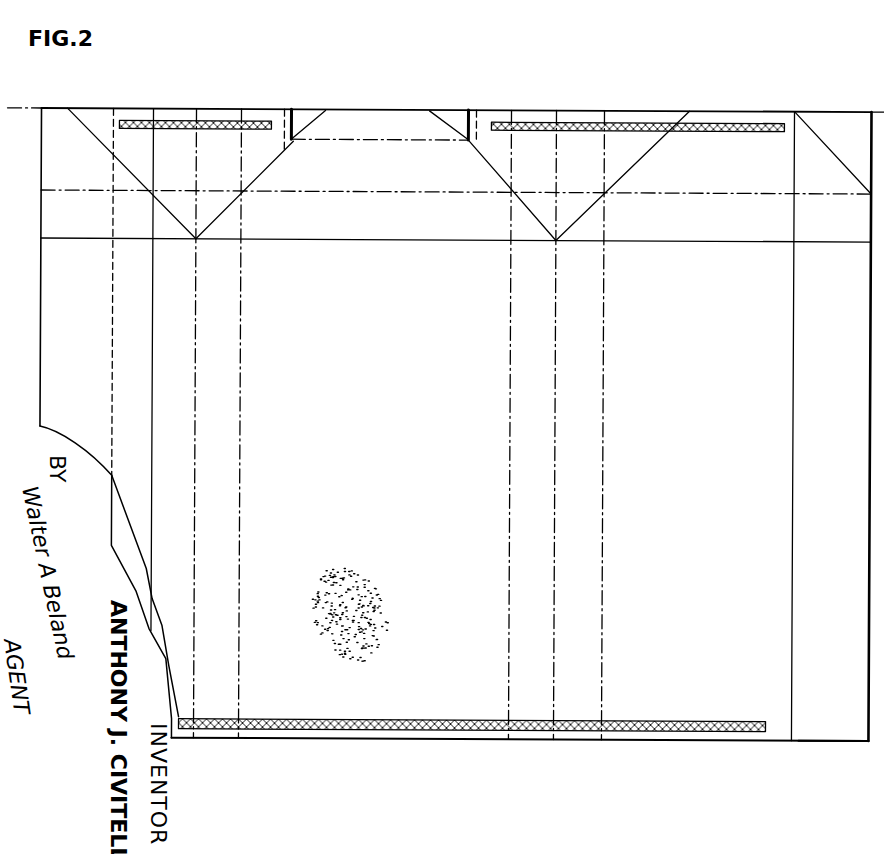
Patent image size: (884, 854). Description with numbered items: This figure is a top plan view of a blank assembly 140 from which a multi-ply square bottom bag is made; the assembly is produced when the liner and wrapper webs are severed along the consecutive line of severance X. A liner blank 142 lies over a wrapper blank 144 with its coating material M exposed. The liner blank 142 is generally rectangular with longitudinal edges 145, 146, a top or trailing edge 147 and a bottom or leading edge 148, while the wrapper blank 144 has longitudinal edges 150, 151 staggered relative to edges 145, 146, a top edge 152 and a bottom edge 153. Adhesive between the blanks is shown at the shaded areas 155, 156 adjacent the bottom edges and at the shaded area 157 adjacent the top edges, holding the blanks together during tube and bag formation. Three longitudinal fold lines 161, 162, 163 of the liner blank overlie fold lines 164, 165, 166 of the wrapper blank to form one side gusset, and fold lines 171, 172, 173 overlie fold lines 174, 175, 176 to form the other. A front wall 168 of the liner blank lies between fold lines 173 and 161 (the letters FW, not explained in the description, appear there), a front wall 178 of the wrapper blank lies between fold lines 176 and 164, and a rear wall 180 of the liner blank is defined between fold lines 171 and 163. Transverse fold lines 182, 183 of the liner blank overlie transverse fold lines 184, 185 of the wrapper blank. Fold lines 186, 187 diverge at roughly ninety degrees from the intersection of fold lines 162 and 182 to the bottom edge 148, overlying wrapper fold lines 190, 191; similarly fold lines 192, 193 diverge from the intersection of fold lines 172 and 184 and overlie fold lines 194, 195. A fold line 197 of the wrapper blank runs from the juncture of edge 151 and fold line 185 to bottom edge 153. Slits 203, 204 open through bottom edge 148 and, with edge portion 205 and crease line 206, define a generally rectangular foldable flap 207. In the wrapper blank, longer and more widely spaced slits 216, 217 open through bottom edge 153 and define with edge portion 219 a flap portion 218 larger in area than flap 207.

The blank assembly 140 is at (576, 70).
The liner blank 142 is at (371, 699).
The wrapper blank 144 is at (106, 540).
The longitudinal edge 145 is at (38, 313).
The longitudinal edge 146 is at (793, 447).
The top or trailing edge 147 is at (648, 742).
The bottom or leading edge 148 is at (773, 108).
The longitudinal edge 150 is at (108, 495).
The longitudinal edge 151 is at (870, 500).
The top edge 152 is at (845, 742).
The bottom edge 153 is at (816, 108).
The shaded area 155 is at (165, 122).
The shaded area 156 is at (532, 424).
The shaded area 157 is at (430, 722).
The longitudinal fold line 161 is at (148, 418).
The longitudinal fold line 162 is at (197, 463).
The longitudinal fold line 163 is at (238, 530).
The longitudinal fold line 164 is at (152, 308).
The longitudinal fold line 165 is at (195, 342).
The longitudinal fold line 166 is at (240, 413).
The front wall 168 is at (690, 598).
The longitudinal fold line 171 is at (508, 508).
The longitudinal fold line 172 is at (560, 482).
The longitudinal fold line 173 is at (602, 553).
The longitudinal fold line 174 is at (508, 398).
The longitudinal fold line 175 is at (560, 380).
The longitudinal fold line 176 is at (605, 425).
The front wall 178 is at (820, 372).
The rear wall 180 is at (377, 550).
The transverse fold line 182 is at (293, 241).
The transverse fold line 183 is at (300, 193).
The transverse fold line 184 is at (807, 245).
The transverse fold line 185 is at (856, 194).
The fold line 186 is at (82, 127).
The fold line 187 is at (312, 122).
The fold line 190 is at (128, 163).
The fold line 191 is at (219, 213).
The fold line 192 is at (530, 210).
The fold line 193 is at (573, 220).
The fold line 194 is at (532, 240).
The fold line 195 is at (660, 133).
The fold line 197 is at (858, 180).
The slit 203 is at (304, 123).
The slit 204 is at (465, 121).
The edge portion 205 is at (378, 110).
The fold or crease line 206 is at (380, 140).
The foldable flap 207 is at (410, 120).
The slit 216 is at (276, 122).
The slit 217 is at (494, 115).
The flap portion 218 is at (357, 131).
The edge portion 219 is at (283, 110).
The line of severance X is at (446, 95).
The coating material M is at (364, 594).
The fresh water FW is at (707, 545).